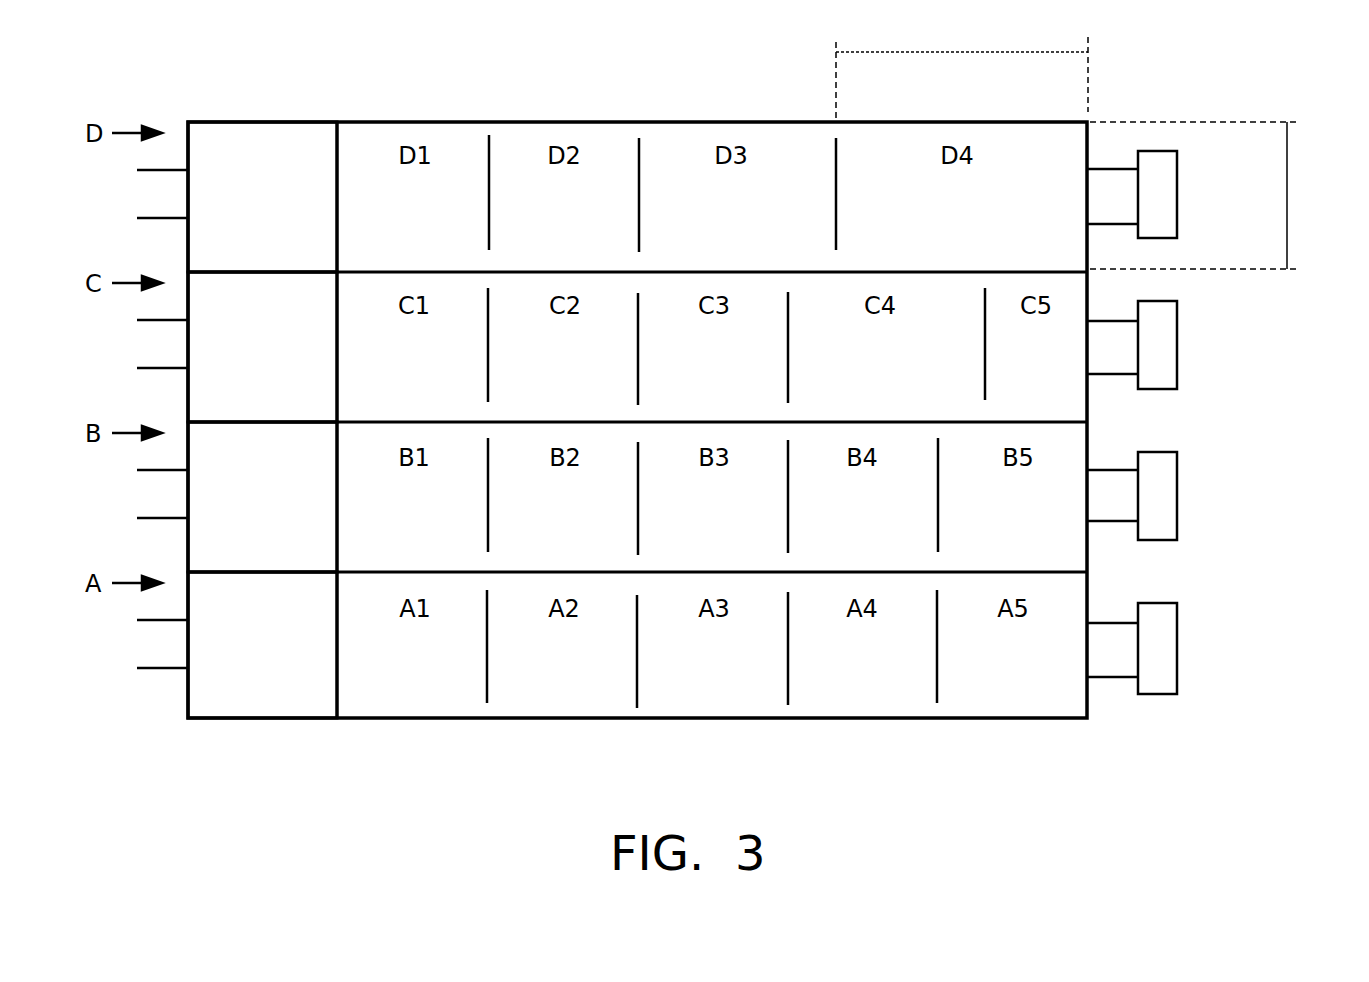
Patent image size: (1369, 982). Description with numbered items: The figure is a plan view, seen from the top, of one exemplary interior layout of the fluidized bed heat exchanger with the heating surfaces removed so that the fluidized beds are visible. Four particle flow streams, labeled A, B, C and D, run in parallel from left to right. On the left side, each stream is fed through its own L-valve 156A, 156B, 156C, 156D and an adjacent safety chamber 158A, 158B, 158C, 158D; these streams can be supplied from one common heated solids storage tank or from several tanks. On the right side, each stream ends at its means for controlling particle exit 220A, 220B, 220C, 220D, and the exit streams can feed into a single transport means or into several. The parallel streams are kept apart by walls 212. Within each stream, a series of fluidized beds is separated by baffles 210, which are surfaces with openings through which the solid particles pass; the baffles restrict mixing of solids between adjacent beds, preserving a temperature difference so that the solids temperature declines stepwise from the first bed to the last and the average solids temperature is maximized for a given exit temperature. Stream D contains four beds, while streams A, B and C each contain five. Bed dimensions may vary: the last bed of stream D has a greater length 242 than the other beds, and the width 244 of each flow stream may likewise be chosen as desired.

The L-valve 156A is at (131, 644).
The L-valve 156B is at (131, 494).
The L-valve 156C is at (131, 344).
The L-valve 156D is at (131, 194).
The safety chamber 158A is at (262, 645).
The safety chamber 158B is at (262, 497).
The safety chamber 158C is at (262, 347).
The safety chamber 158D is at (262, 197).
The baffle 210 is at (640, 198).
The wall 212 is at (900, 269).
The means for controlling particle exit 220A is at (1170, 648).
The means for controlling particle exit 220B is at (1169, 496).
The means for controlling particle exit 220C is at (1170, 345).
The means for controlling particle exit 220D is at (1170, 194).
The length 242 is at (962, 67).
The width 244 is at (1216, 195).